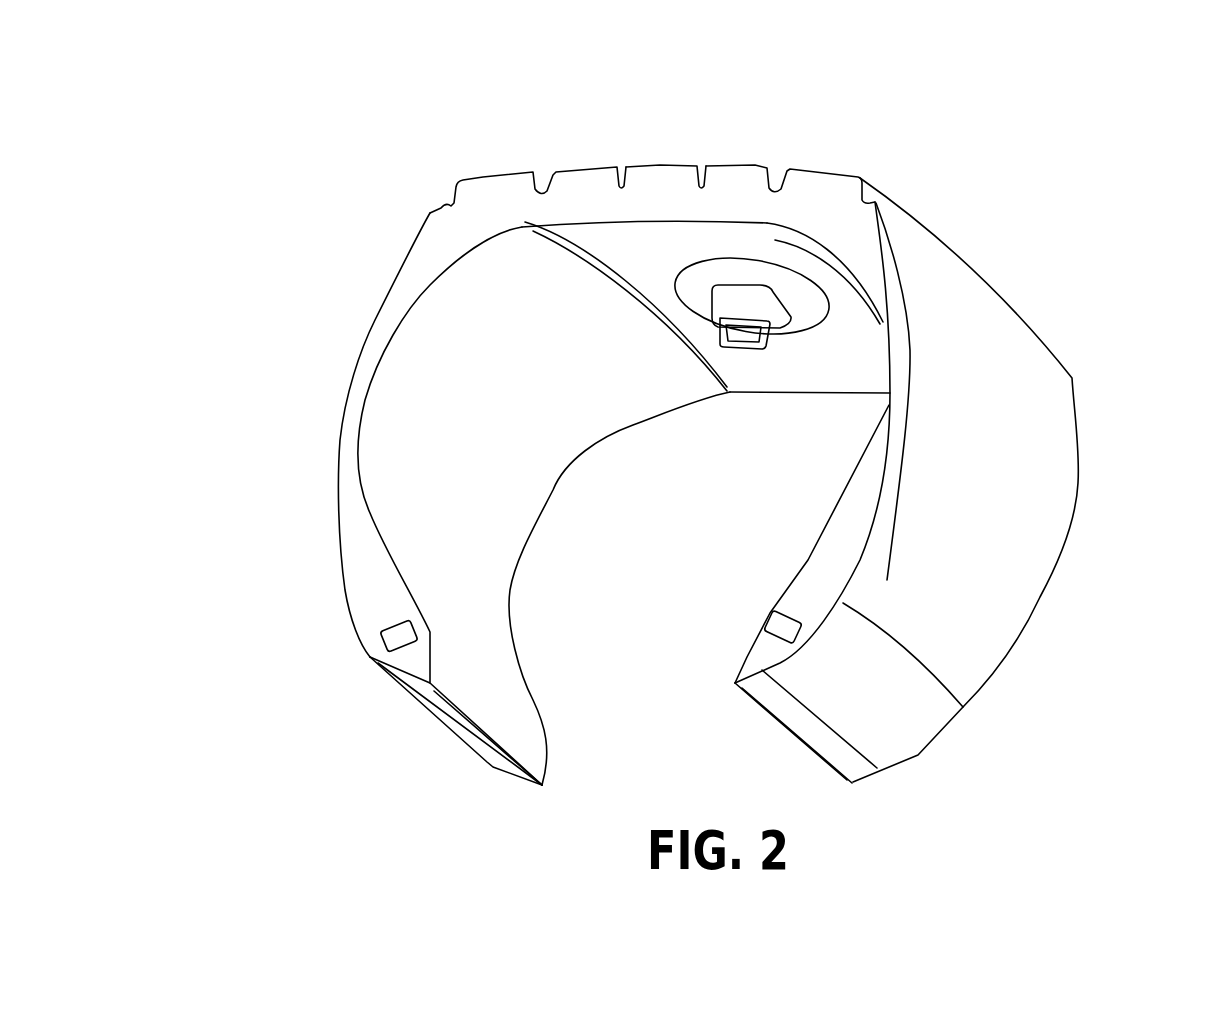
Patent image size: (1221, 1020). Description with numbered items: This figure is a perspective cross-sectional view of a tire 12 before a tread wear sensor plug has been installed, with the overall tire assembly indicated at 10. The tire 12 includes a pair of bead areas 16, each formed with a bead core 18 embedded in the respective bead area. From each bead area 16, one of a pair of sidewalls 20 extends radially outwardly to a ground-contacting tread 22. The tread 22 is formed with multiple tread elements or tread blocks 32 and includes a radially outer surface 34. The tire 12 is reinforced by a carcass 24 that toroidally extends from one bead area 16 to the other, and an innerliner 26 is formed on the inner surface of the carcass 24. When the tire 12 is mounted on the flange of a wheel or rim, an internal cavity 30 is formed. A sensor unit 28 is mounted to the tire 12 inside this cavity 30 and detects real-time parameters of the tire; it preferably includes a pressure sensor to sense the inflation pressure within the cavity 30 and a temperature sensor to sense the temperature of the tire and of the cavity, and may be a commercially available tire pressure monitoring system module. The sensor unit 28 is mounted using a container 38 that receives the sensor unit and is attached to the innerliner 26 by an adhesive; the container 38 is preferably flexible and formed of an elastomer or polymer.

The tire 10 is at (1024, 156).
The tire 12 is at (1080, 388).
The bead areas 16 is at (377, 598).
The bead core 18 is at (392, 626).
The sidewalls 20 is at (350, 377).
The tread 22 is at (482, 174).
The carcass 24 is at (638, 208).
The innerliner 26 is at (695, 222).
The sensor unit 28 is at (735, 364).
The internal cavity 30 is at (860, 447).
The tread elements 32 is at (660, 165).
The radially outer surface 34 is at (755, 165).
The container 38 is at (807, 287).